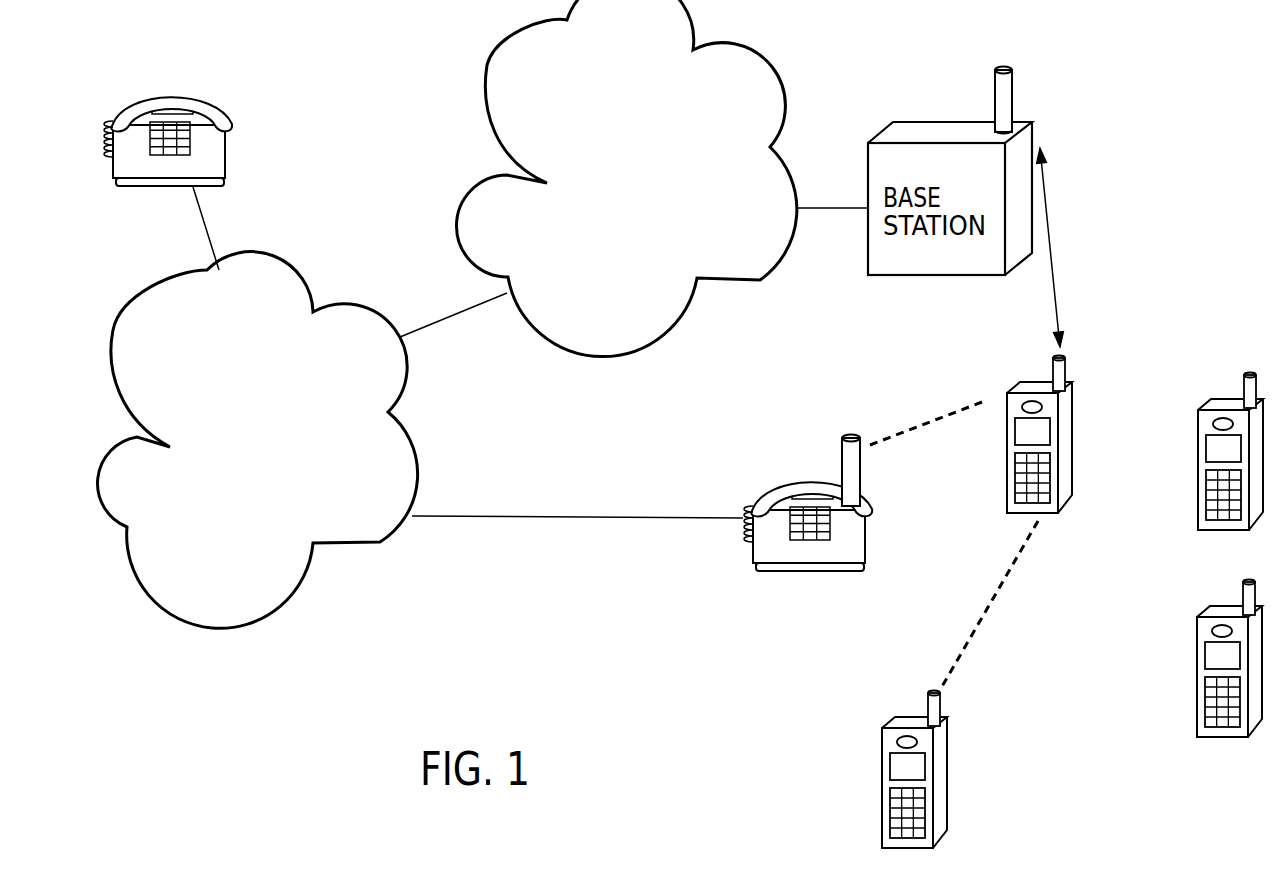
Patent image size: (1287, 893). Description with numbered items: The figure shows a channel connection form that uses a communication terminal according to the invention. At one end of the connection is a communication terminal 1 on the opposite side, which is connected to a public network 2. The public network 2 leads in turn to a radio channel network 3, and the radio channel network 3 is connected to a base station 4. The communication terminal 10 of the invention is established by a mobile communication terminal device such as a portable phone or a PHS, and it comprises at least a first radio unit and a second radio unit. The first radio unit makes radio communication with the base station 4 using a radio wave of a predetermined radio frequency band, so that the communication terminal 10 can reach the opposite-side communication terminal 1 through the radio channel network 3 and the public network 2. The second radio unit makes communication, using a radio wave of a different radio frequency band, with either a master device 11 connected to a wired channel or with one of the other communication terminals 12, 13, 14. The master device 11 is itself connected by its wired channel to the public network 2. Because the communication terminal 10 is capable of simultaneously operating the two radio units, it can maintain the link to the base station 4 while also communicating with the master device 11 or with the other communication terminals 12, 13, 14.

The communication terminal in the opposite side 1 is at (174, 90).
The public network 2 is at (408, 447).
The radio channel network 3 is at (783, 92).
The base station 4 is at (1013, 90).
The communication terminal 10 is at (1074, 402).
The master device 11 is at (812, 478).
The other communication terminal 12 is at (944, 758).
The other communication terminal 13 is at (1194, 492).
The other communication terminal 14 is at (1194, 698).